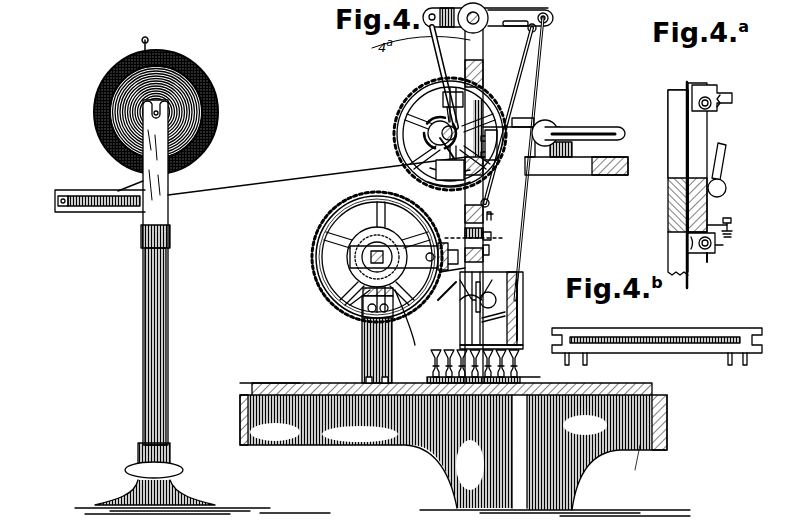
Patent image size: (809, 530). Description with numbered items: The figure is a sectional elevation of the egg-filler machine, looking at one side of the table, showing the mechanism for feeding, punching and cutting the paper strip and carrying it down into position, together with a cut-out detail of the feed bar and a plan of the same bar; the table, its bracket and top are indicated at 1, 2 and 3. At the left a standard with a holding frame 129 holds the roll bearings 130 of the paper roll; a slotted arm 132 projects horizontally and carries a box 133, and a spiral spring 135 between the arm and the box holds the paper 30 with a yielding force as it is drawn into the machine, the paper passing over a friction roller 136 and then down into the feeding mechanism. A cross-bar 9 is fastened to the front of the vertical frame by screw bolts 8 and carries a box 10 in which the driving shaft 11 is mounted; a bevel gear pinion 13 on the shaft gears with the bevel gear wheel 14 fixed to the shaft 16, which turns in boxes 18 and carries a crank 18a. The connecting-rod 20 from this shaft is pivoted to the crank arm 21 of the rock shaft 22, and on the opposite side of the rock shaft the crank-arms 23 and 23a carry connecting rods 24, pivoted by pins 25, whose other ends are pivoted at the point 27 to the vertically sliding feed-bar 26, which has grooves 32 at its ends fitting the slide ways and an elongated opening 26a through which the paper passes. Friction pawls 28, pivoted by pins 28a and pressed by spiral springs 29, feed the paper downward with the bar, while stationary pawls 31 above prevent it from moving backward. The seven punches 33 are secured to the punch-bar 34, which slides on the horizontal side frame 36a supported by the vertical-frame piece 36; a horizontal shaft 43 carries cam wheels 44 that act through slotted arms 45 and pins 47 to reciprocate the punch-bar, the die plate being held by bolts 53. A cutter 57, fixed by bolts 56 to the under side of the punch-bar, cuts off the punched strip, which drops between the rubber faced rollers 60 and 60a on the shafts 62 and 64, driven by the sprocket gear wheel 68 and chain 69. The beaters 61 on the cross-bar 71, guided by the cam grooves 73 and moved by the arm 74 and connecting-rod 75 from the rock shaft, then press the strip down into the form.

In FIG. 4, the base / table 1 is at (300, 427).
In FIG. 4, the base bracket 2 is at (645, 440).
In FIG. 4, the table top 3 is at (295, 383).
In FIG. 4, the screw bolts 8 is at (497, 140).
In FIG. 4, the cross-bar 9 is at (575, 172).
In FIG. 4, the box 10 is at (553, 123).
In FIG. 4, the driving shaft 11 is at (595, 125).
In FIG. 4, the bevel gear pinion 13 is at (524, 118).
In FIG. 4, the bevel gear wheel 14 is at (405, 95).
In FIG. 4, the shaft 16 is at (456, 127).
In FIG. 4, the boxes 18 is at (453, 107).
In FIG. 4, the crank 18a is at (424, 133).
In FIG. 4, the connecting-rod 20 is at (462, 55).
In FIG. 4, the crank arm 21 is at (430, 28).
In FIG. 4, the rock shaft 22 is at (483, 30).
In FIG. 4, the crank-arm 23 is at (540, 27).
In FIG. 4, the crank-arm 23a is at (560, 45).
In FIG. 4, the connecting rod 24 is at (522, 70).
In FIG. 4A, the connecting rod 24 is at (726, 160).
In FIG. 4, the pin 25 is at (540, 70).
In FIG. 4, the feed-bar 26 is at (465, 207).
In FIG. 4A, the feed-bar 26 is at (668, 215).
In FIG. 4B, the feed-bar 26 is at (640, 328).
In FIG. 4B, the slot or opening 26a is at (690, 343).
In FIG. 4, the pivot point 27 is at (490, 203).
In FIG. 4A, the pivot point 27 is at (724, 194).
In FIG. 4, the friction pawl 28 is at (487, 242).
In FIG. 4A, the friction pawl 28 is at (700, 253).
In FIG. 4, the pin 28a is at (490, 250).
In FIG. 4A, the pin 28a is at (712, 253).
In FIG. 4, the spiral spring 29 is at (493, 216).
In FIG. 4A, the spiral spring 29 is at (731, 235).
In FIG. 4, the paper 30 is at (120, 185).
In FIG. 4A, the paper 30 is at (684, 280).
In FIG. 4, the friction pawls 31 is at (430, 185).
In FIG. 4A, the friction pawls 31 is at (710, 87).
In FIG. 4B, the groove 32 is at (558, 330).
In FIG. 4, the punches 33 is at (433, 268).
In FIG. 4, the punch-bar 34 is at (438, 305).
In FIG. 4, the vertical-frame piece 36 is at (362, 352).
In FIG. 4, the horizontal side frame 36a is at (430, 245).
In FIG. 4, the horizontal shaft 43 is at (372, 262).
In FIG. 4, the cam wheel 44 is at (340, 250).
In FIG. 4, the slotted arm 45 is at (370, 195).
In FIG. 4, the pin 47 is at (345, 310).
In FIG. 4, the bolts 53 is at (520, 310).
In FIG. 4, the bolts 56 is at (476, 290).
In FIG. 4, the horizontal knife or cutter 57 is at (482, 320).
In FIG. 4, the rubber faced rollers 60 is at (460, 300).
In FIG. 4, the rubber faced rollers 60a is at (523, 348).
In FIG. 4, the beaters 61 is at (515, 372).
In FIG. 4, the shaft 62 is at (418, 345).
In FIG. 4, the short shaft 64 is at (494, 305).
In FIG. 4, the sprocket gear wheel 68 is at (350, 258).
In FIG. 4, the sprocket chain 69 is at (335, 220).
In FIG. 4, the cross-bar 71 is at (520, 300).
In FIG. 4, the cam grooves 73 is at (538, 377).
In FIG. 4, the arm 74 is at (549, 18).
In FIG. 4, the connecting-rod 75 is at (551, 130).
In FIG. 4, the holding frame 129 is at (160, 212).
In FIG. 4, the roll bearings 130 is at (165, 100).
In FIG. 4, the slotted arm 132 is at (90, 215).
In FIG. 4, the box 133 is at (58, 200).
In FIG. 4, the spiral spring 135 is at (110, 207).
In FIG. 4, the friction roller 136 is at (438, 140).